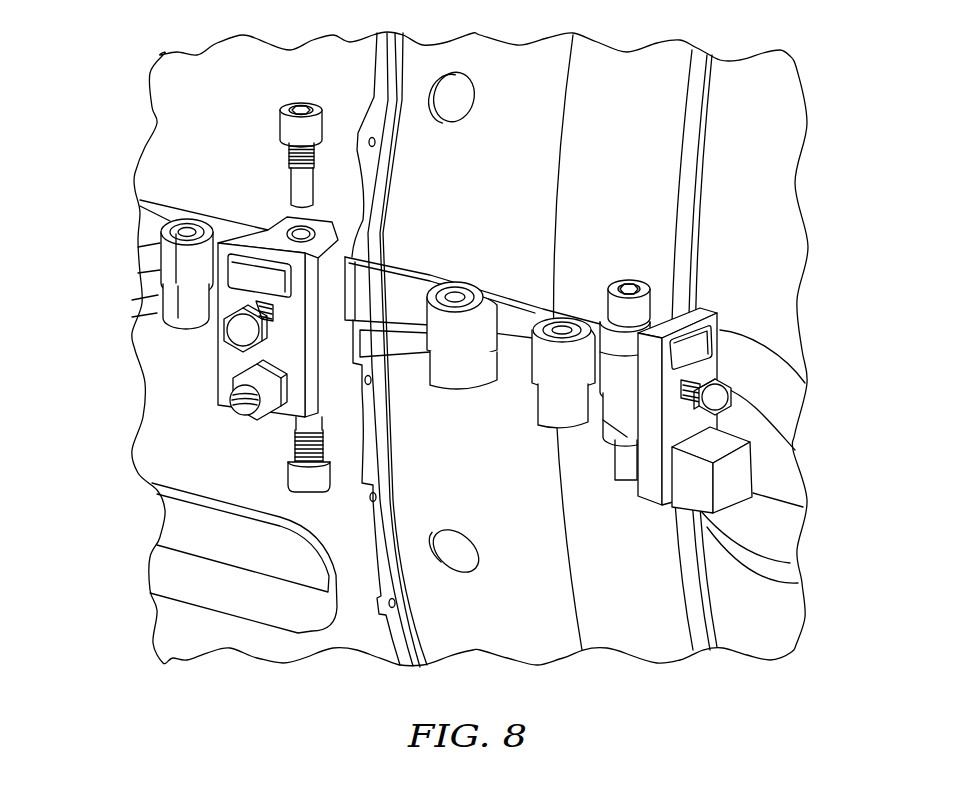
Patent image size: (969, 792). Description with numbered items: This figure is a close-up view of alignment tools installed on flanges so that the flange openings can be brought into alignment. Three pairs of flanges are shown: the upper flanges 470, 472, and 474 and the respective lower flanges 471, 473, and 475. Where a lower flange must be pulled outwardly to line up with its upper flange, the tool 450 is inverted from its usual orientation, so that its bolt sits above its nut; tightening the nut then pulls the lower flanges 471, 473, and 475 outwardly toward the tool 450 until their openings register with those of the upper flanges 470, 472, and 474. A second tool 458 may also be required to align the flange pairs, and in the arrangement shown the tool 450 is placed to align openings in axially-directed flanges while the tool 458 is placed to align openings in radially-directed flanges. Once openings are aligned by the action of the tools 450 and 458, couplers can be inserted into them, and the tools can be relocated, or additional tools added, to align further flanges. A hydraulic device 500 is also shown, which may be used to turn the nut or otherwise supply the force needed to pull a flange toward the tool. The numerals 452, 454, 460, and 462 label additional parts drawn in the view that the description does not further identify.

The tool 450 is at (228, 358).
The fastener 452 is at (327, 283).
The support bar 454 is at (325, 333).
The tool 458 is at (700, 308).
The fastener 460 is at (584, 312).
The spacer 462 is at (617, 415).
The upper flange 470 is at (168, 258).
The lower flange 471 is at (170, 296).
The upper flange 472 is at (493, 283).
The lower flange 473 is at (475, 368).
The upper flange 474 is at (562, 360).
The lower flange 475 is at (572, 403).
The hydraulic device 500 is at (733, 478).